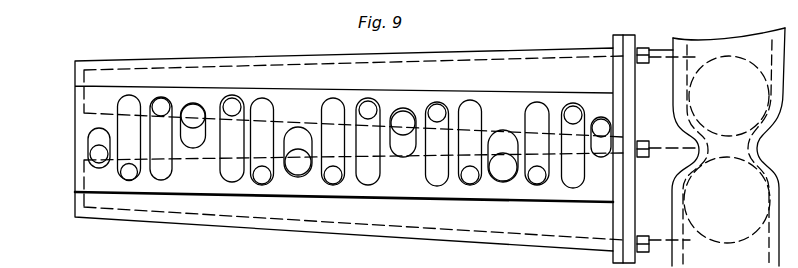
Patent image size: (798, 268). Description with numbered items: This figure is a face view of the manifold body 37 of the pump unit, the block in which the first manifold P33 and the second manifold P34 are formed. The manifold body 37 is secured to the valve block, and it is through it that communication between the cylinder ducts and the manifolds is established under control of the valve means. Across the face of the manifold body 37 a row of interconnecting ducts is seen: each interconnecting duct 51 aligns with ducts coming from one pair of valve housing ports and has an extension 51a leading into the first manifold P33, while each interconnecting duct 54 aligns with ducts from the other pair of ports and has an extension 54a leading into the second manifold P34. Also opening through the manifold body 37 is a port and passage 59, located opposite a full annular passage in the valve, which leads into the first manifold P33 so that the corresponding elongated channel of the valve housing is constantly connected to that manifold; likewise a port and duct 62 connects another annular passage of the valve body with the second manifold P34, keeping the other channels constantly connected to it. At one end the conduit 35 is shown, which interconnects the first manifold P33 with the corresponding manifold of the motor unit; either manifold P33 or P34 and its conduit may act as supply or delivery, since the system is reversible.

The manifold body 37 is at (80, 170).
The conduit 35 is at (758, 24).
The interconnecting duct 51 is at (162, 170).
The extension of duct 51 51a is at (164, 103).
The interconnecting duct 54 is at (127, 106).
The extension of duct 54 54a is at (128, 176).
The port and passage 59 is at (196, 148).
The port and duct 62 is at (96, 140).
The first manifold P33 is at (100, 66).
The second manifold P34 is at (134, 217).